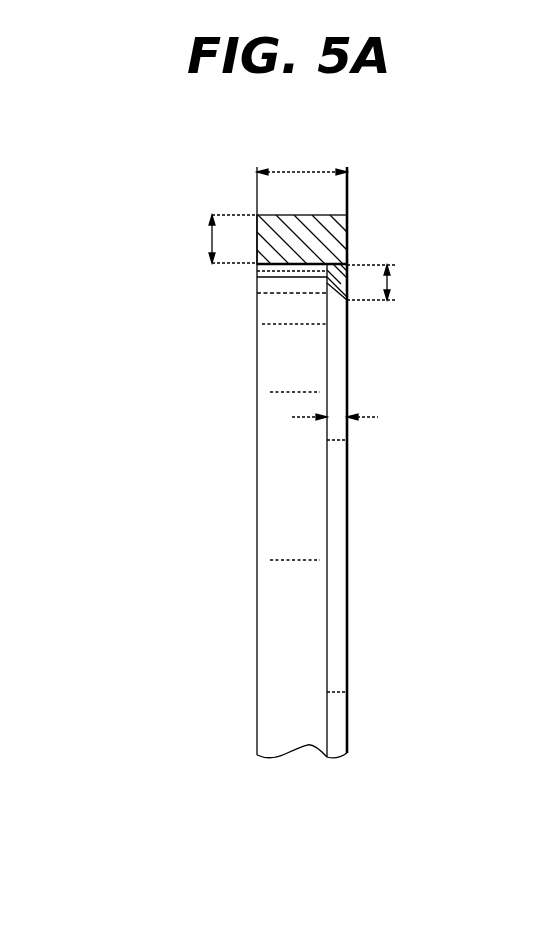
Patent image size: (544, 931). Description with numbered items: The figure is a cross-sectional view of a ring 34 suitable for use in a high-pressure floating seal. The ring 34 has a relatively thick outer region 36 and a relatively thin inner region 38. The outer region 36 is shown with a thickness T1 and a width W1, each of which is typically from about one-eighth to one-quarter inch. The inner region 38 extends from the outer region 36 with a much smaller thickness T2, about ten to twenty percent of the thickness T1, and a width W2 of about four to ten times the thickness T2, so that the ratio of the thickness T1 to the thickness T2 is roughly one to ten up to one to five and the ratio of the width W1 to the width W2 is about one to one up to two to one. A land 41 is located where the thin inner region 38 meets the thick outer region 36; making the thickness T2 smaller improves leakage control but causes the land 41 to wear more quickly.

The ring 34 is at (433, 510).
The outer region 36 is at (292, 242).
The inner region 38 is at (337, 282).
The land 41 is at (347, 333).
The width of outer region W1 is at (208, 241).
The width of inner region W2 is at (390, 283).
The thickness of outer region T1 is at (300, 168).
The thickness of inner region T2 is at (353, 423).